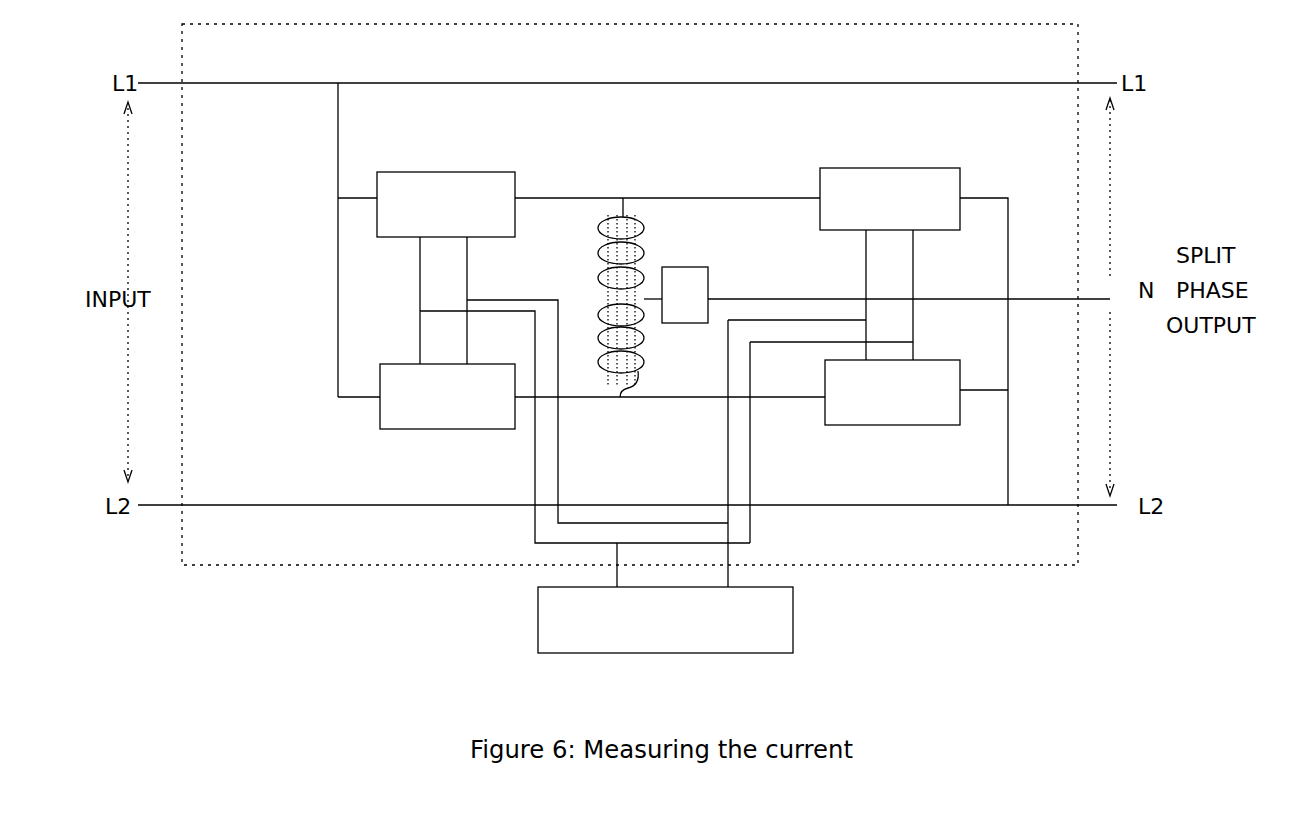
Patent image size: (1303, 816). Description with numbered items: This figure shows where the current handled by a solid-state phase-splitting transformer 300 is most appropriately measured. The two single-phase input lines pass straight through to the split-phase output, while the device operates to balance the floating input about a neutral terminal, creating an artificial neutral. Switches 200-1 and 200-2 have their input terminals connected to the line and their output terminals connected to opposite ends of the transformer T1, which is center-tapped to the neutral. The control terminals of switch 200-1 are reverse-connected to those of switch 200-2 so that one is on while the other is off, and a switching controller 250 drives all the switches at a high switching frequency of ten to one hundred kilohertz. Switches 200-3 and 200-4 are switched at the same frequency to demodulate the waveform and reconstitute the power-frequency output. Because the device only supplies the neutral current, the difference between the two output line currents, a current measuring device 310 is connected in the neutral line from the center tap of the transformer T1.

The split-phase converter / measurement circuit enclosure 300 is at (657, 62).
The switch 200-1 is at (404, 170).
The switch 200-2 is at (380, 430).
The switch 200-3 is at (878, 166).
The switch 200-4 is at (876, 426).
The transformer T1 is at (600, 297).
The current measuring device 310 is at (706, 295).
The switching controller 250 is at (683, 629).